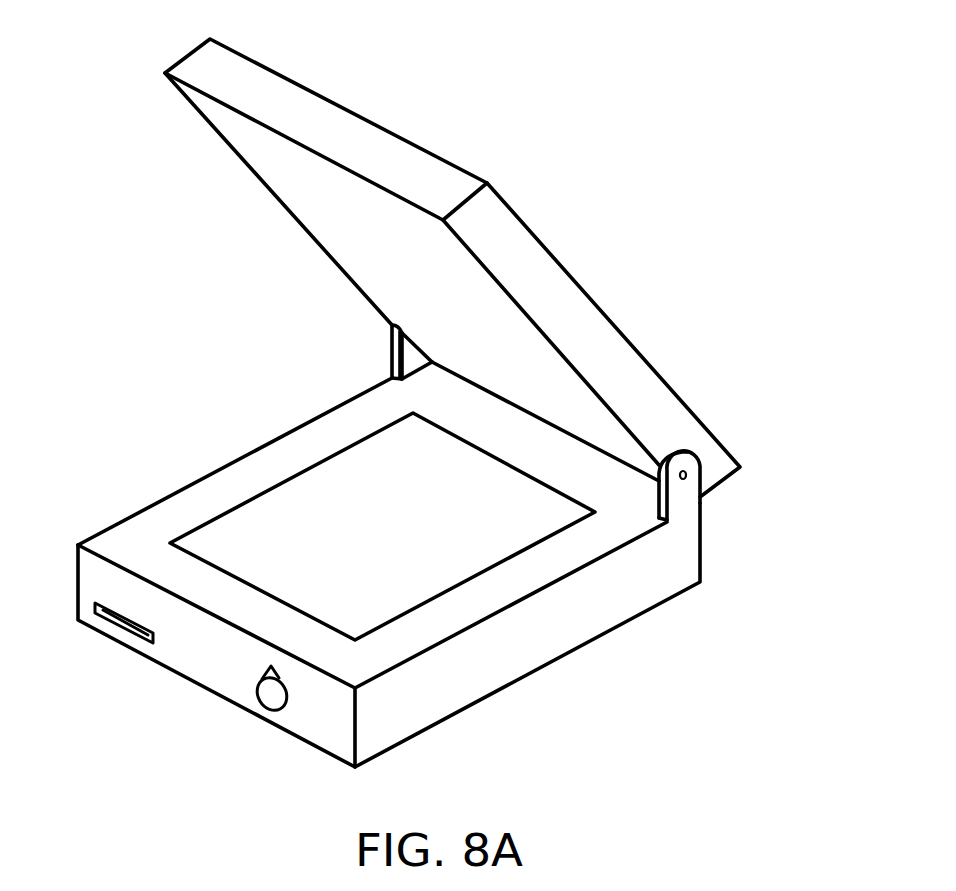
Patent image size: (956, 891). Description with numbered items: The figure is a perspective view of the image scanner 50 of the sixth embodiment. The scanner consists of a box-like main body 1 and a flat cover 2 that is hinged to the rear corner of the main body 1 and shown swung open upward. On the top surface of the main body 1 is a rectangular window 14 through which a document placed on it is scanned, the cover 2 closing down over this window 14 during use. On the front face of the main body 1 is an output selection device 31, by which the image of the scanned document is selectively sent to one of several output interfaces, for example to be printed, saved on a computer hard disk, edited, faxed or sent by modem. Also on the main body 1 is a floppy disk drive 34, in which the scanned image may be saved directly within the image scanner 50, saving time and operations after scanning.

The main body 1 is at (523, 650).
The cover 2 is at (597, 302).
The window 14 is at (313, 512).
The output selection device 31 is at (270, 693).
The floppy disk drive 34 is at (130, 625).
The image scanner 50 is at (770, 141).